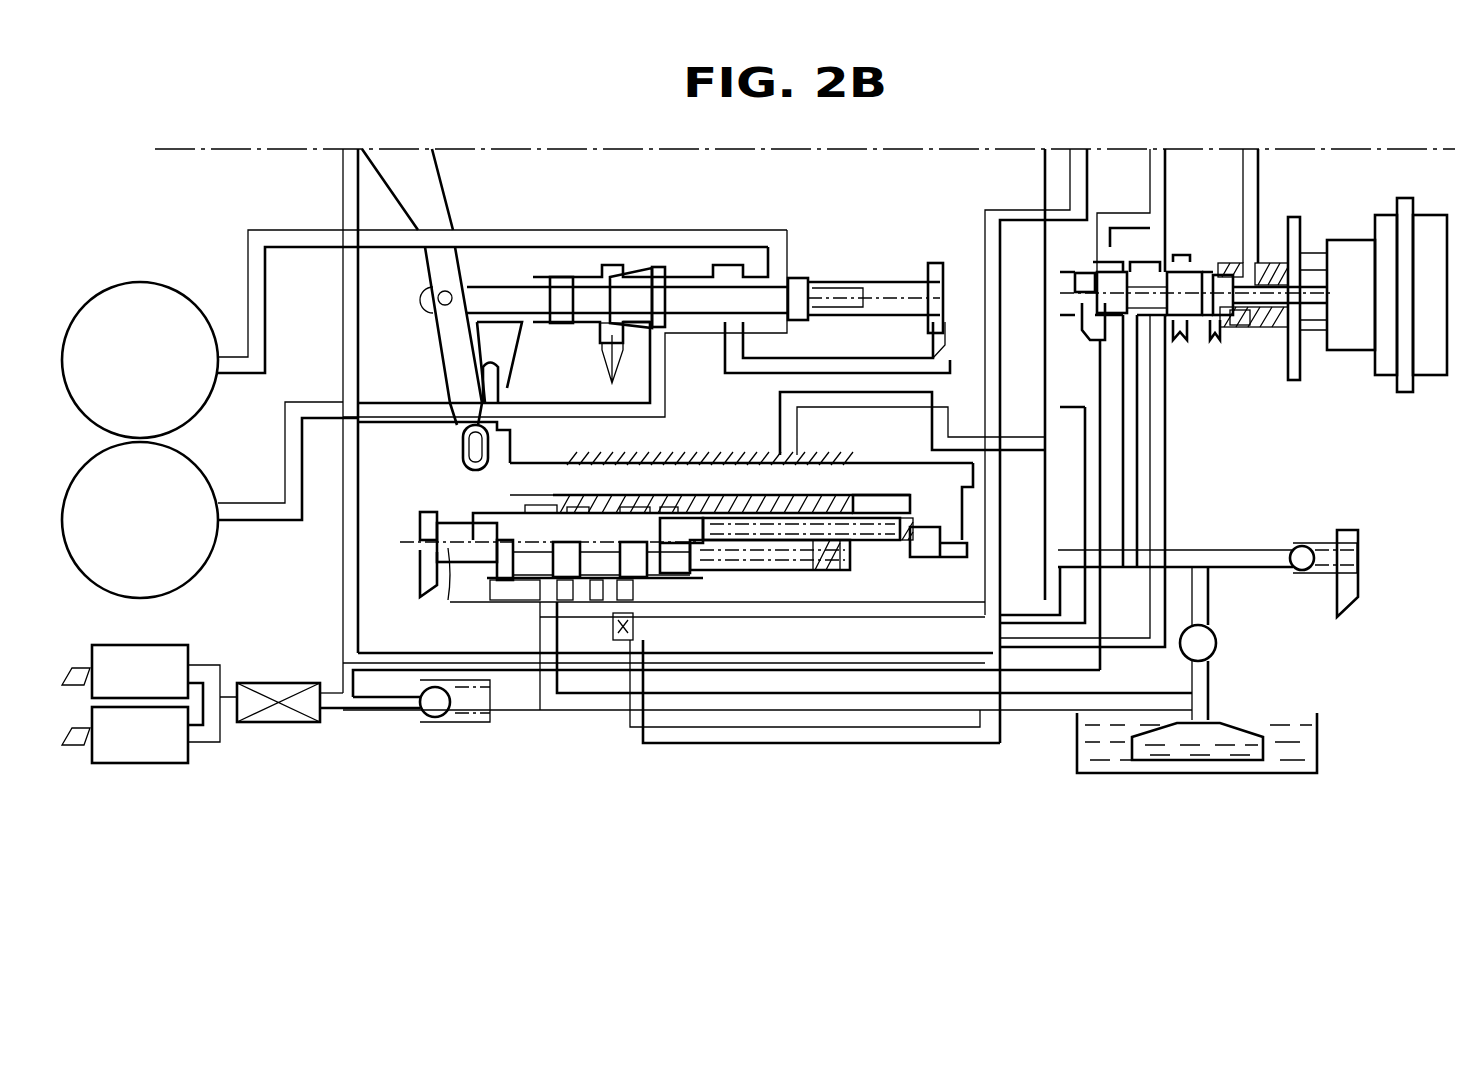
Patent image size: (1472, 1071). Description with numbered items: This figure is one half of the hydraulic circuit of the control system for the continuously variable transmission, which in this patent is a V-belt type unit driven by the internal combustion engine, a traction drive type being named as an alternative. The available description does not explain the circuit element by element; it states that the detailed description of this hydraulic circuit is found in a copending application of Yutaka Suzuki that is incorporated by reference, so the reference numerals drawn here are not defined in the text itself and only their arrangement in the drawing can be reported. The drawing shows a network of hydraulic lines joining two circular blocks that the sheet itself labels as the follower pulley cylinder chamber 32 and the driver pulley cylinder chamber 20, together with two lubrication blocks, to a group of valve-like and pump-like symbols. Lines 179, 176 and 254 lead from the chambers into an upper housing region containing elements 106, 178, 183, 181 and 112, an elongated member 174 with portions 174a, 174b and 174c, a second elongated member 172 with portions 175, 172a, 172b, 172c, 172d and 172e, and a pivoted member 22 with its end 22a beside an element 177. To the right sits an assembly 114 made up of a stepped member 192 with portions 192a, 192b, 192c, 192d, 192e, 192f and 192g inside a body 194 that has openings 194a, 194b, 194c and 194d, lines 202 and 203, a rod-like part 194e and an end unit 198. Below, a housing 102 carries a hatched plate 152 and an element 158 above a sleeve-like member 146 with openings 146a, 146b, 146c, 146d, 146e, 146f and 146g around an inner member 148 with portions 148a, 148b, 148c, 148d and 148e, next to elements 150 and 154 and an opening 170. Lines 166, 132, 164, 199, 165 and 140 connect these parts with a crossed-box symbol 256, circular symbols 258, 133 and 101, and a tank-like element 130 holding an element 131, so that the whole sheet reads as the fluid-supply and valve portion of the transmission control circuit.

The follower pulley cylinder chamber 32 is at (199, 412).
The driver pulley cylinder chamber 20 is at (202, 559).
The passage 179 is at (300, 246).
The passage 176 is at (323, 421).
The passage 254 is at (343, 324).
The housing 106 is at (809, 228).
The lever 178 is at (440, 200).
The link 183 is at (463, 456).
The pin 181 is at (438, 297).
The shift control mechanism 112 is at (408, 325).
The shaft 174 is at (492, 290).
The flange 174a is at (563, 286).
The flange 174b is at (715, 279).
The collar 174c is at (797, 290).
The spool 172 is at (862, 283).
The flange 175 is at (922, 285).
The land 172a is at (608, 322).
The land 172b is at (652, 330).
The land 172c is at (728, 345).
The land 172d is at (780, 328).
The groove 172e is at (935, 330).
The lever 22 is at (518, 348).
The pin 22a is at (500, 372).
The spring 177 is at (622, 367).
The land 192a is at (1075, 325).
The spool 192 is at (1150, 275).
The valve body 194 is at (1085, 303).
The port 194a is at (1097, 287).
The port 194b is at (1103, 290).
The passage 202 is at (1105, 245).
The port 194c is at (1185, 285).
The port 194d is at (1233, 290).
The rod 194e is at (1285, 265).
The passage 203 is at (1252, 210).
The actuator 198 is at (1425, 210).
The land 192b is at (1095, 333).
The land 192c is at (1130, 325).
The land 192e is at (1178, 336).
The land 192d is at (1160, 325).
The land 192f is at (1220, 322).
The land 192g is at (1243, 325).
The valve assembly 114 is at (1248, 403).
The housing 102 is at (424, 622).
The plate 152 is at (760, 560).
The passage 158 is at (975, 470).
The sleeve 146 is at (500, 560).
The spool 148 is at (455, 560).
The land 148b is at (440, 545).
The port 146a is at (425, 575).
The land 148a is at (455, 578).
The port 146b is at (485, 600).
The passage 166 is at (508, 602).
The port 146c is at (545, 560).
The land 148c is at (580, 560).
The land 148d is at (627, 553).
The port 146g is at (665, 500).
The land 148e is at (680, 570).
The piston 150 is at (880, 543).
The piston 154 is at (875, 570).
The passage 132 is at (848, 610).
The port 170 is at (648, 620).
The port 146f is at (627, 595).
The port 146d is at (583, 573).
The port 146e is at (605, 573).
The passage 164 is at (550, 695).
The passage 199 is at (623, 648).
The passage 165 is at (690, 745).
The valve 256 is at (280, 683).
The pump 258 is at (425, 715).
The pump 133 is at (1304, 540).
The pump 101 is at (1224, 624).
The passage 140 is at (1135, 630).
The reservoir 130 is at (1320, 740).
The filter 131 is at (1215, 725).